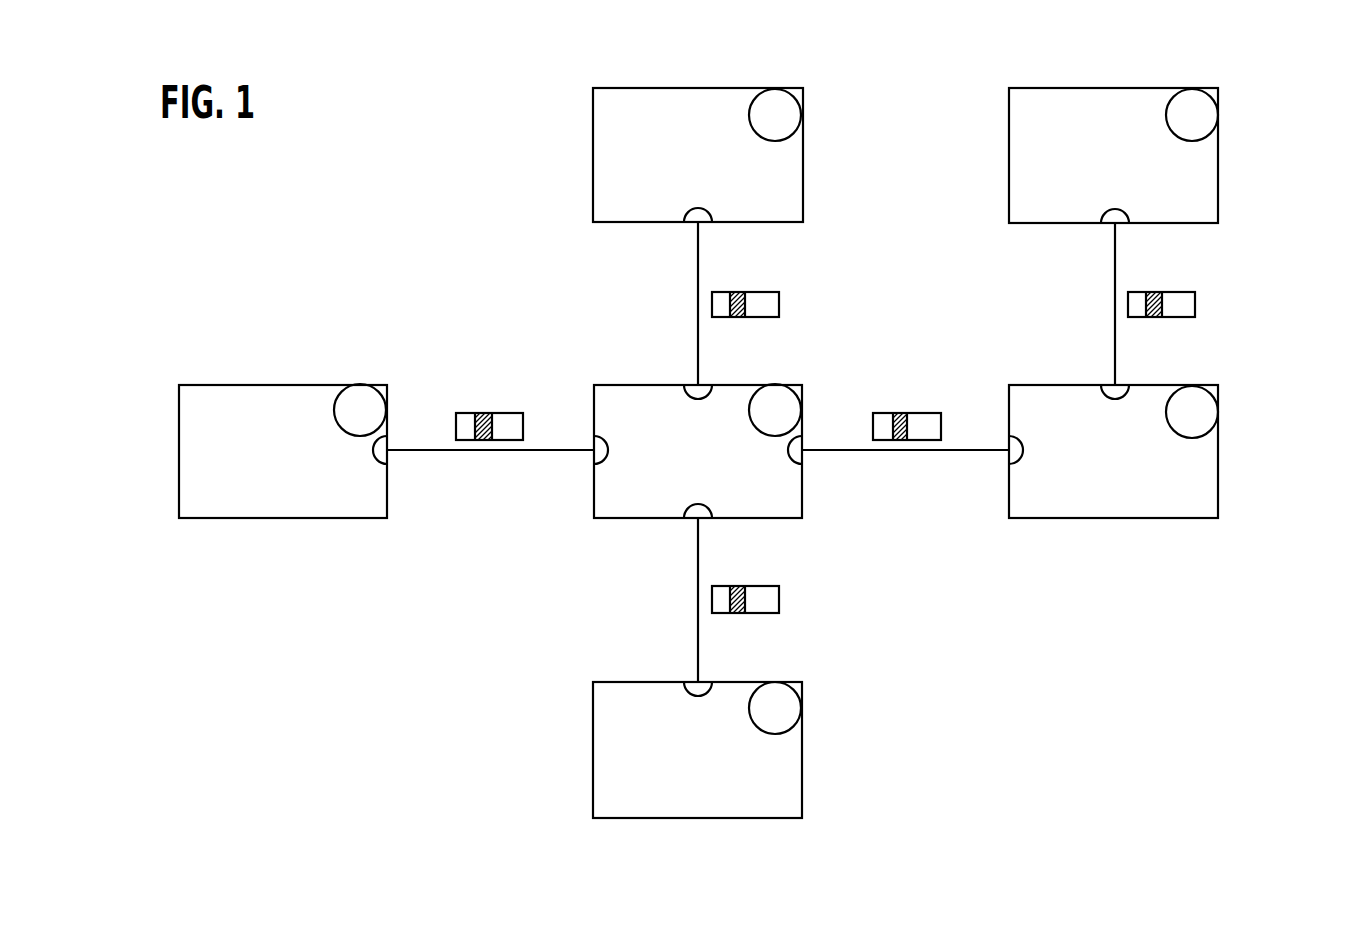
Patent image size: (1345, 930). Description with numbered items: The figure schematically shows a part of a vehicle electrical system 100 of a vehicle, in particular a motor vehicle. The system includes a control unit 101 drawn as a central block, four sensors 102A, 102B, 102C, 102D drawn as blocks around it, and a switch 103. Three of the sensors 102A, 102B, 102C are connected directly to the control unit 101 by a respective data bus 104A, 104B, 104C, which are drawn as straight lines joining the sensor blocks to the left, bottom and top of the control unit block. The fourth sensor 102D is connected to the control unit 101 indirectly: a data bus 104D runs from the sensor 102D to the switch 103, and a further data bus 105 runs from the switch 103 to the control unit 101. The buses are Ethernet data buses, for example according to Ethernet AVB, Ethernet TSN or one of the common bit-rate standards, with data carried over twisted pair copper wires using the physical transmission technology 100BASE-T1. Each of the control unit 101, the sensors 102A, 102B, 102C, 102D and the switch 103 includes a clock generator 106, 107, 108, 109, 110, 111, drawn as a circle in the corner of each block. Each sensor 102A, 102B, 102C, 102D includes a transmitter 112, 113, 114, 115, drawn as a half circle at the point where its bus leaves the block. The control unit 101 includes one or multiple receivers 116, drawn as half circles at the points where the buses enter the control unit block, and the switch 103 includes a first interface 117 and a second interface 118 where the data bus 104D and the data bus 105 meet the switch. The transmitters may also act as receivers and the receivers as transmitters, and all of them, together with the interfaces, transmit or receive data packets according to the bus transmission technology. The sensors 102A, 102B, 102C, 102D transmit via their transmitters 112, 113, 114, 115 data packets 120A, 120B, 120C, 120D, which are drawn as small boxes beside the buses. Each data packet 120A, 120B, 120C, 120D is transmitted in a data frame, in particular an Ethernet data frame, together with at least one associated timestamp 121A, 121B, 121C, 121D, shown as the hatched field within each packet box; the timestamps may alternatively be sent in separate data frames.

The vehicle electrical system 100 is at (412, 219).
The control unit 101 is at (637, 395).
The sensor 102A is at (227, 395).
The sensor 102B is at (622, 693).
The sensor 102C is at (638, 97).
The sensor 102D is at (1057, 98).
The switch 103 is at (1050, 397).
The data bus 104A is at (483, 457).
The data bus 104B is at (697, 550).
The data bus 104C is at (697, 267).
The data bus 104D is at (1115, 267).
The data bus 105 is at (900, 457).
The clock generator 106 is at (360, 395).
The clock generator 107 is at (795, 708).
The clock generator 108 is at (1210, 413).
The clock generator 109 is at (1192, 97).
The clock generator 110 is at (775, 97).
The clock generator 111 is at (778, 390).
The transmitter 112 is at (373, 452).
The transmitter 113 is at (698, 693).
The transmitter 114 is at (697, 213).
The transmitter 115 is at (1115, 213).
The receiver 116 is at (698, 397).
The first interface 117 is at (1115, 395).
The second interface 118 is at (1020, 457).
The data packet 120A is at (518, 413).
The data packet 120B is at (779, 600).
The data packet 120C is at (780, 305).
The data packet 120D is at (1195, 307).
The timestamp 121A is at (480, 413).
The timestamp 121B is at (737, 586).
The timestamp 121C is at (737, 290).
The timestamp 121D is at (1153, 292).